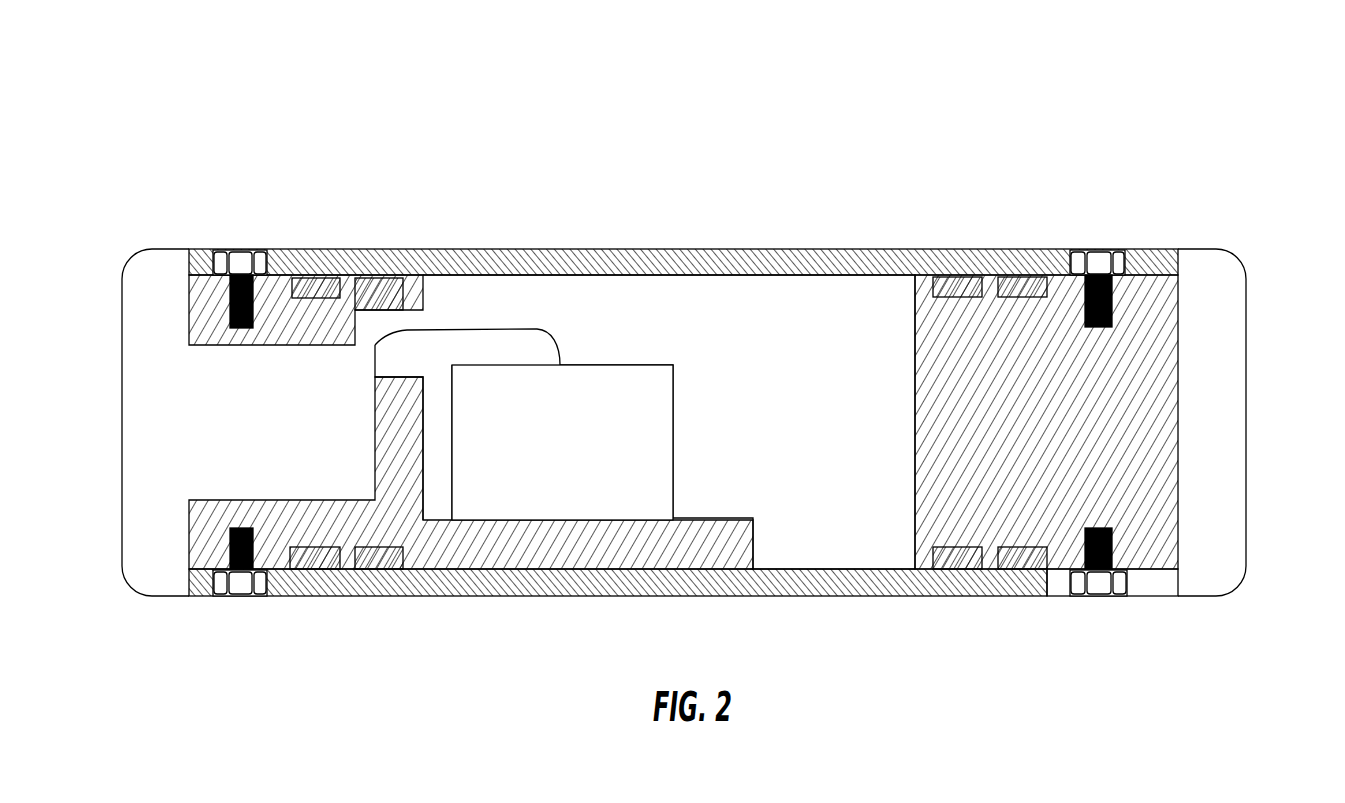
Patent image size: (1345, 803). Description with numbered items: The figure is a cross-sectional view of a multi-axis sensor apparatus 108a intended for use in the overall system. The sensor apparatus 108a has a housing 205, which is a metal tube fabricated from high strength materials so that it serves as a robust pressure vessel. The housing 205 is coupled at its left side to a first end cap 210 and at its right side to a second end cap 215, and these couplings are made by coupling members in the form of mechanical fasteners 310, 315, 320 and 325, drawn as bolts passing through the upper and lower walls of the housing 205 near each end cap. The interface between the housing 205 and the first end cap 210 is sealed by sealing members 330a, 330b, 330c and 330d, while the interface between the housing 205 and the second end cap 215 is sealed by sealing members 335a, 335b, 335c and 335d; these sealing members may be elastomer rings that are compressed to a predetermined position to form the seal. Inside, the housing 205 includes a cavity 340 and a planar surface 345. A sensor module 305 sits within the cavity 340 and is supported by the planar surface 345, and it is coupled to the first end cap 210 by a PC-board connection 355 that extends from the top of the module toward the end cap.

The sensor apparatus 108a is at (144, 94).
The housing 205 is at (810, 262).
The first end cap 210 is at (135, 302).
The second end cap 215 is at (1235, 302).
The sensor module 305 is at (645, 365).
The mechanical fastener 310 is at (222, 250).
The mechanical fastener 315 is at (224, 596).
The mechanical fastener 320 is at (1093, 250).
The mechanical fastener 325 is at (1098, 596).
The sealing member 330a is at (305, 250).
The sealing member 330b is at (378, 250).
The sealing member 330c is at (305, 597).
The sealing member 330d is at (365, 597).
The sealing member 335a is at (962, 282).
The sealing member 335b is at (1025, 280).
The sealing member 335c is at (960, 597).
The sealing member 335d is at (1027, 596).
The cavity 340 is at (676, 290).
The planar surface 345 is at (723, 520).
The PC-board connection 355 is at (483, 325).